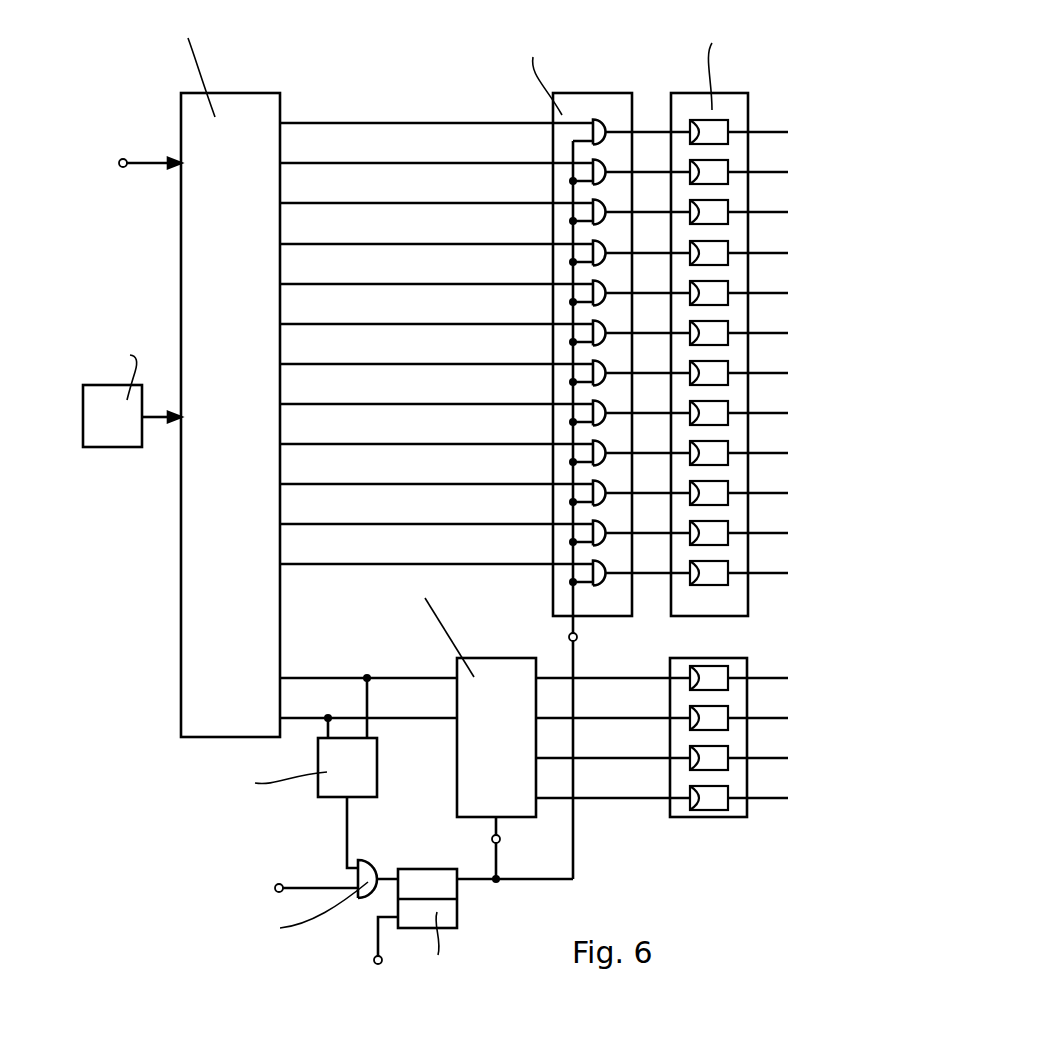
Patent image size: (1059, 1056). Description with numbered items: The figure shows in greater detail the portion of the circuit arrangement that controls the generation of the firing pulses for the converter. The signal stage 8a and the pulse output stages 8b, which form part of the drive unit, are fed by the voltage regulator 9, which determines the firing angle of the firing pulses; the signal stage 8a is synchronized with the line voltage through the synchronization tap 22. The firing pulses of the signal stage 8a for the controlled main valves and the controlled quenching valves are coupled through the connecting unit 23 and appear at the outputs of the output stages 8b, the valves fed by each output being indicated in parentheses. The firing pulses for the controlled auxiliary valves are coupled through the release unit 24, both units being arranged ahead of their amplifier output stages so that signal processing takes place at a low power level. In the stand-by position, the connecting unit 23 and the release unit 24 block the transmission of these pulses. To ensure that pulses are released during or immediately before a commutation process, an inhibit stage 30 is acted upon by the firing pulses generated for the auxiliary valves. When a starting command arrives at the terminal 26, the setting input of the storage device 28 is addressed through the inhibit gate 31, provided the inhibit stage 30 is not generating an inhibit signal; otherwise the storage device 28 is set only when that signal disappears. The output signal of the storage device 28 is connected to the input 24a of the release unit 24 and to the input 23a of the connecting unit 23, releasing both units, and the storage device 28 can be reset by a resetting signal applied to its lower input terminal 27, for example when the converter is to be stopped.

The signal stage 8a is at (224, 93).
The synchronization tap 22 is at (123, 158).
The voltage regulator 9 is at (98, 390).
The connecting unit 23 is at (571, 93).
The pulse output stages 8b is at (693, 93).
The input of the connecting unit 23a is at (577, 637).
The release unit 24 is at (487, 658).
The input of the release unit 24a is at (500, 839).
The inhibit stage 30 is at (377, 768).
The inhibit gate 31 is at (365, 862).
The terminal 26 is at (283, 877).
The terminal 27 is at (374, 960).
The storage device 28 is at (457, 912).